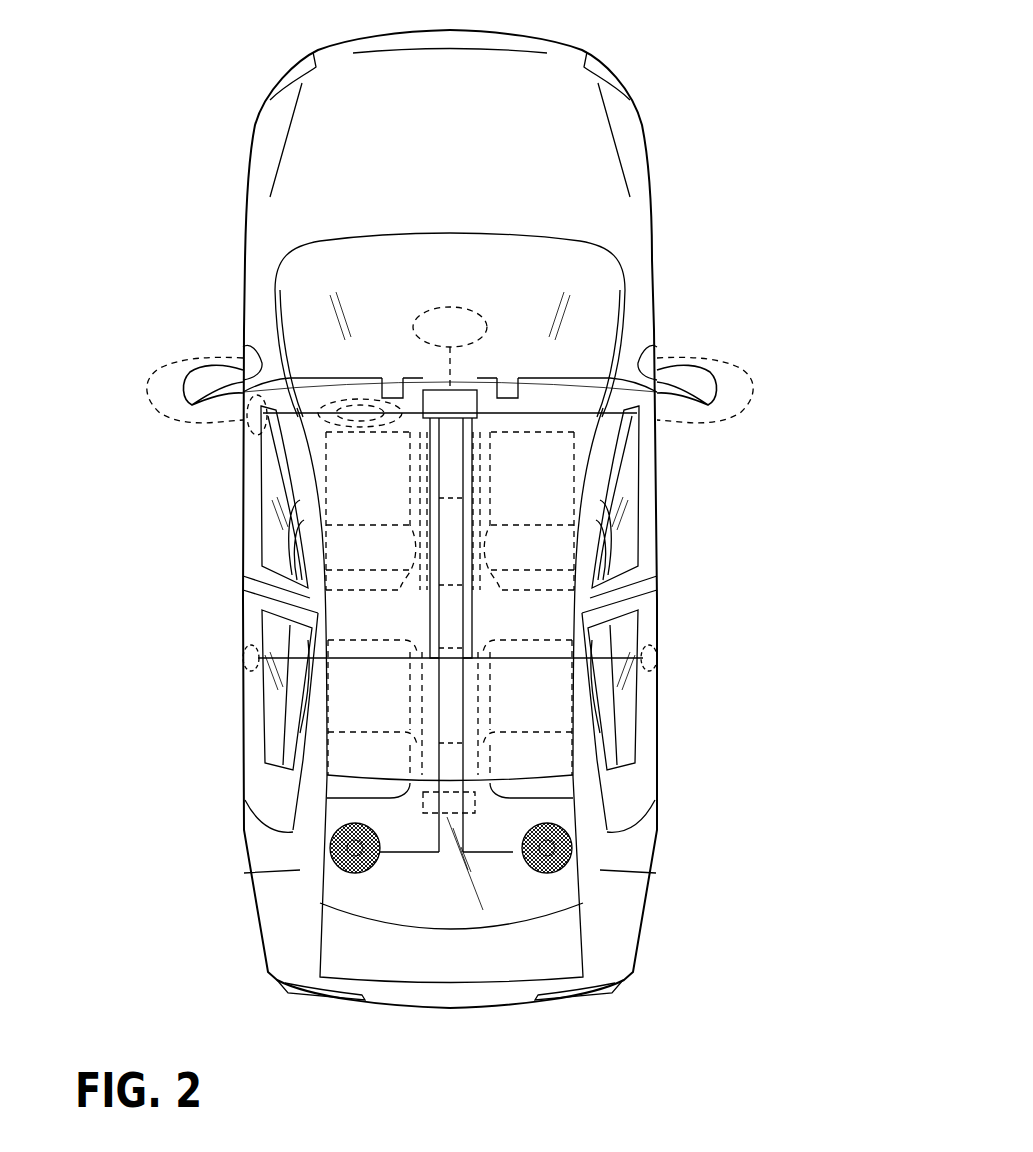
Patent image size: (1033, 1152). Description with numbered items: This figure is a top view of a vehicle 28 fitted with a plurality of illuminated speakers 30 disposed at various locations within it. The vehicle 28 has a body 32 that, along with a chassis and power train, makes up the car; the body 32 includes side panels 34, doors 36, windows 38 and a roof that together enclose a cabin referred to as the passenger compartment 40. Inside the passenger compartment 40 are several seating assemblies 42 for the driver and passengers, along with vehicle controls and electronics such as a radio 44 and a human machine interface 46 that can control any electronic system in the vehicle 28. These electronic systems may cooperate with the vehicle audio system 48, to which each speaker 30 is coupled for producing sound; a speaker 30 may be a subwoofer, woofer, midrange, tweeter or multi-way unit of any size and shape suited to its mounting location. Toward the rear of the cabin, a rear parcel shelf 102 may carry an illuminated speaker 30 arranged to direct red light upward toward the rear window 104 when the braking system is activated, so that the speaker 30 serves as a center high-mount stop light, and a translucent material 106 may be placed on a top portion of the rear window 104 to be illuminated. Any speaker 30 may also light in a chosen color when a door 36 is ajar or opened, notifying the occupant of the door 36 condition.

The vehicle 28 is at (665, 160).
The illuminated speaker 30 is at (438, 312).
The body 32 is at (640, 219).
The side panels 34 is at (645, 274).
The doors 36 is at (248, 521).
The windows 38 is at (276, 552).
The passenger compartment 40 is at (553, 713).
The seating assemblies 42 is at (345, 480).
The radio 44 is at (497, 410).
The human machine interface 46 is at (250, 440).
The vehicle audio system 48 is at (430, 393).
The rear parcel shelf 102 is at (393, 893).
The rear window 104 is at (503, 831).
The translucent material 106 is at (478, 808).